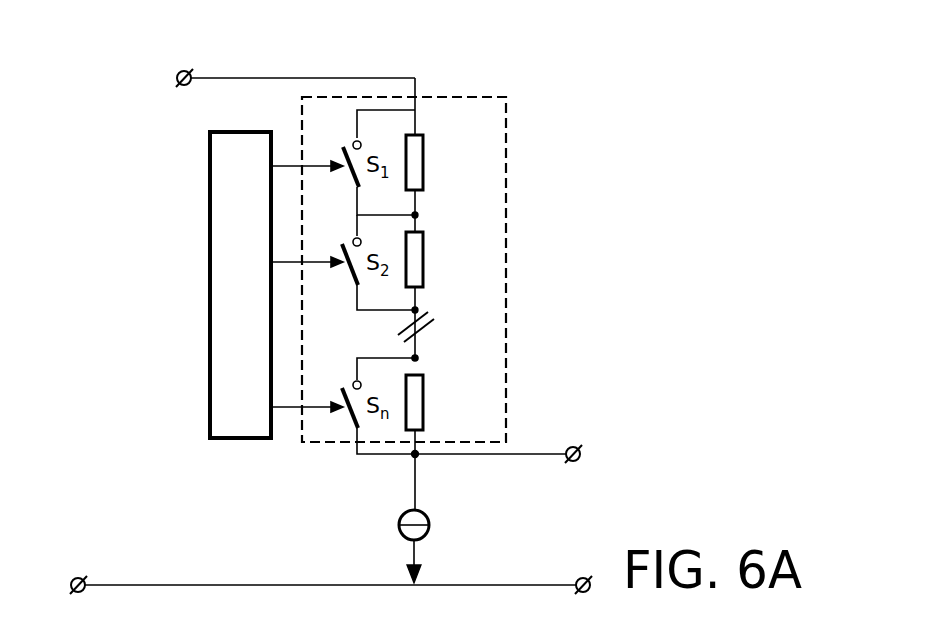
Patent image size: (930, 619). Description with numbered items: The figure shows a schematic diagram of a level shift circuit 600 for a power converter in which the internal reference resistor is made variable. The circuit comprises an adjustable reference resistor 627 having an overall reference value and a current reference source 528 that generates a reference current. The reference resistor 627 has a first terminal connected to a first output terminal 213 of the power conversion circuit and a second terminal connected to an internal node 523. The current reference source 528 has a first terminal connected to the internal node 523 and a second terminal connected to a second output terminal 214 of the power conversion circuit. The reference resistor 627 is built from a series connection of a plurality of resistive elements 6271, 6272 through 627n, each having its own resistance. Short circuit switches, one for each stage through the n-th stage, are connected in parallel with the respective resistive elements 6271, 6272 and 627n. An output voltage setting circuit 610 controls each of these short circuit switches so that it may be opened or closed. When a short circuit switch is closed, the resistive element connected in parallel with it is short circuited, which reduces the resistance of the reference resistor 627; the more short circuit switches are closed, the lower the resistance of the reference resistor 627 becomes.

The first output terminal 213 is at (258, 80).
The second output terminal 214 is at (176, 585).
The level shift circuit 600 is at (557, 112).
The output voltage setting circuit 610 is at (208, 272).
The adjustable reference resistor 627 is at (506, 203).
The resistive element 6271 is at (423, 163).
The resistive element 6272 is at (423, 260).
The resistive element 627n is at (423, 403).
The internal node 523 is at (420, 458).
The current reference source 528 is at (430, 527).